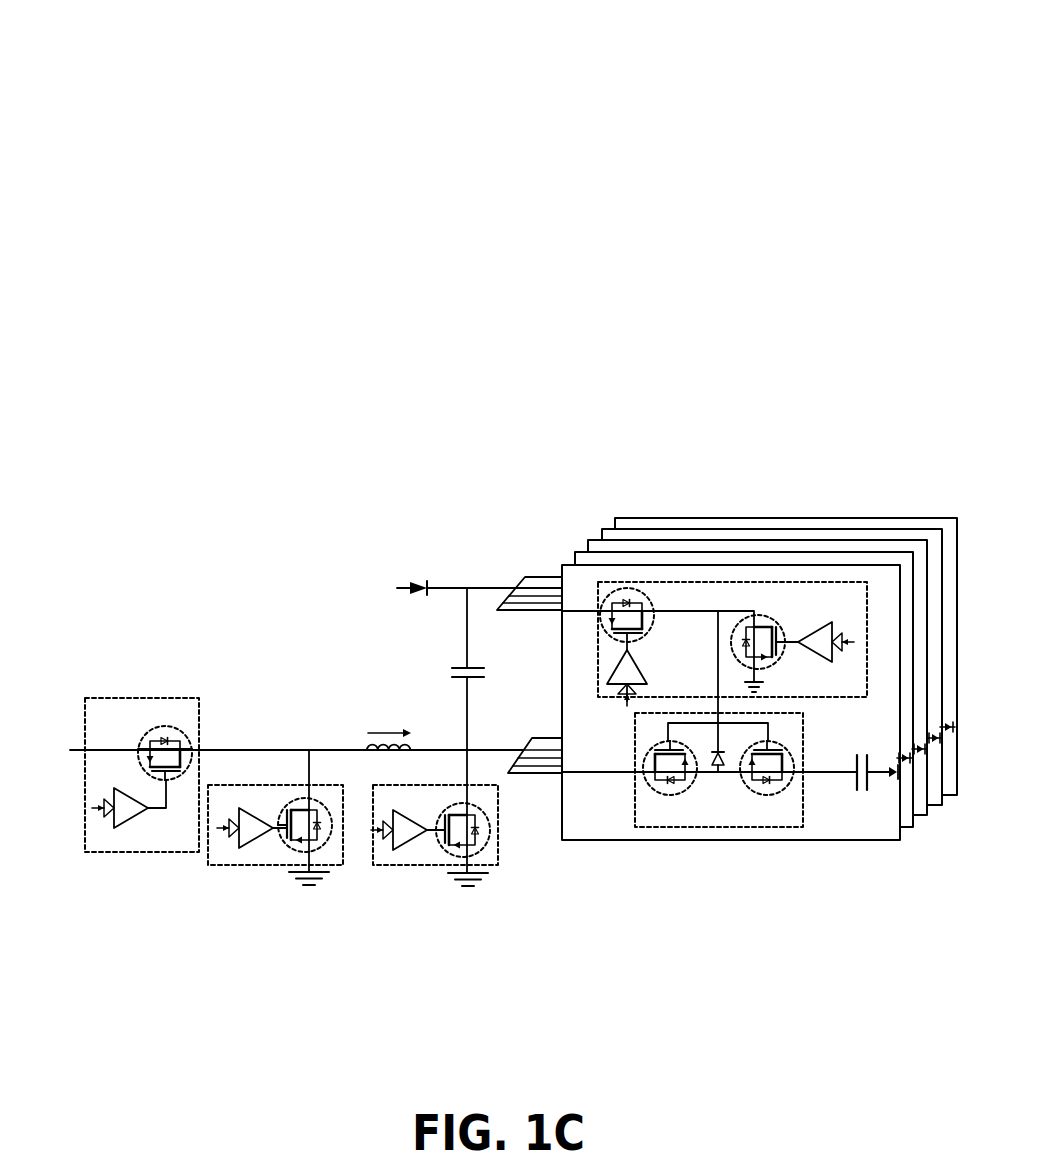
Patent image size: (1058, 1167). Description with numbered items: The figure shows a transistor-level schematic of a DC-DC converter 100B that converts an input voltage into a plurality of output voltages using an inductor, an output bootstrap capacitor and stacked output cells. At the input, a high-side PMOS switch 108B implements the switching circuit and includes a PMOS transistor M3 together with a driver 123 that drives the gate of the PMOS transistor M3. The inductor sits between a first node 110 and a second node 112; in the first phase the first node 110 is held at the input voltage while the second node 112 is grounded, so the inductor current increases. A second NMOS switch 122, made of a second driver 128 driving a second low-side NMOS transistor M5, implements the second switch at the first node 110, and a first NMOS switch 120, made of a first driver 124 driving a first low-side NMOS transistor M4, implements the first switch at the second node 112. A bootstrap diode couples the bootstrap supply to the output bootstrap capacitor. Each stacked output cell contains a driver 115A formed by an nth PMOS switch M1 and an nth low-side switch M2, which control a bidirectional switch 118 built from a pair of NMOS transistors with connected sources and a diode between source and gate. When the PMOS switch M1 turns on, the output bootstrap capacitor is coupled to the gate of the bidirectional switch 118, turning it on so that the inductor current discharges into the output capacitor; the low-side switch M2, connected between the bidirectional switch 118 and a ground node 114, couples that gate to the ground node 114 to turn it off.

The DC-DC converter 100B is at (930, 43).
The driver 115A is at (608, 580).
The high-side PMOS switch 108B is at (150, 697).
The PMOS transistor M3 is at (190, 744).
The first node 110 is at (310, 748).
The second node 112 is at (473, 748).
The nth PMOS switch M1 is at (655, 620).
The nth low-side switch M2 is at (781, 616).
The ground node 114 is at (770, 680).
The bidirectional switch 118 is at (675, 828).
The driver 123 is at (119, 828).
The second NMOS switch 122 is at (207, 866).
The second driver 128 is at (242, 848).
The second low-side NMOS transistor M5 is at (312, 847).
The first driver 124 is at (396, 865).
The first low-side NMOS transistor M4 is at (480, 847).
The first NMOS switch 120 is at (498, 847).